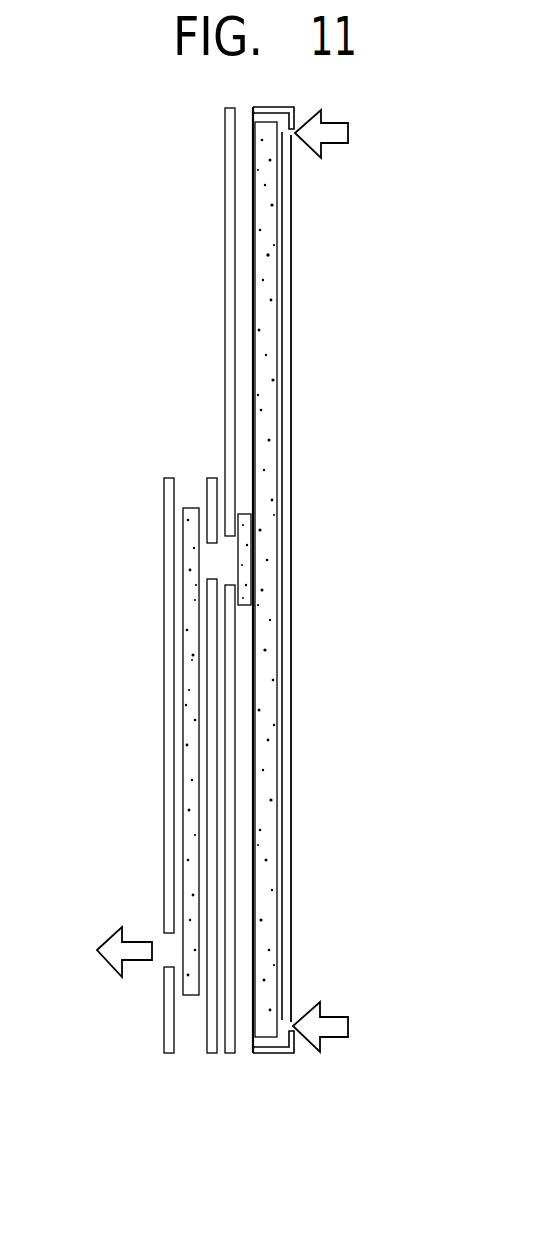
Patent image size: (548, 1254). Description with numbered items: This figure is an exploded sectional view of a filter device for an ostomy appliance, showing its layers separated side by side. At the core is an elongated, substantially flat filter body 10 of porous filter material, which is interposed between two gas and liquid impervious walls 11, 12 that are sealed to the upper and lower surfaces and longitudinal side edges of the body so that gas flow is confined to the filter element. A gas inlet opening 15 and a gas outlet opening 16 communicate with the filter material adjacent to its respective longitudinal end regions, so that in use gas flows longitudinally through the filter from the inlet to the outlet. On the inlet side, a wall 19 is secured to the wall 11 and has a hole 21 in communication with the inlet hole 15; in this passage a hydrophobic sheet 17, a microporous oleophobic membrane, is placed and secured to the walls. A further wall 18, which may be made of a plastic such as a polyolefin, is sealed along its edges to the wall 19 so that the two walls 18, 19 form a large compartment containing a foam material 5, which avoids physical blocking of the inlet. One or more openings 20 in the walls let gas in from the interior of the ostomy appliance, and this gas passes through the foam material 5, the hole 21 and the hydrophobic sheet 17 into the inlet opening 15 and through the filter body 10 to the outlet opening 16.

The foam material 5 is at (268, 263).
The filter body 10 is at (188, 670).
The gas and liquid impervious wall 11 is at (213, 480).
The gas and liquid impervious wall 12 is at (163, 757).
The gas inlet opening 15 is at (212, 563).
The gas outlet opening 16 is at (168, 947).
The hydrophobic sheet 17 is at (250, 557).
The wall 18 is at (295, 212).
The wall 19 is at (231, 338).
The openings 20 is at (297, 138).
The hole 21 is at (233, 552).